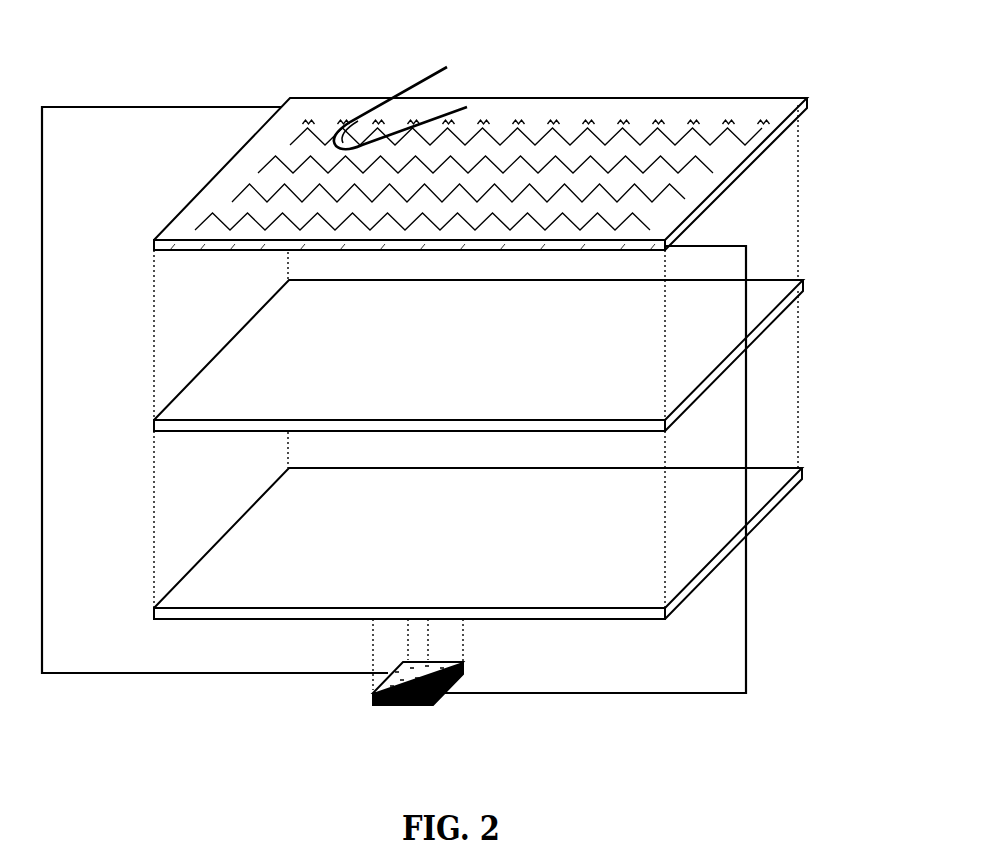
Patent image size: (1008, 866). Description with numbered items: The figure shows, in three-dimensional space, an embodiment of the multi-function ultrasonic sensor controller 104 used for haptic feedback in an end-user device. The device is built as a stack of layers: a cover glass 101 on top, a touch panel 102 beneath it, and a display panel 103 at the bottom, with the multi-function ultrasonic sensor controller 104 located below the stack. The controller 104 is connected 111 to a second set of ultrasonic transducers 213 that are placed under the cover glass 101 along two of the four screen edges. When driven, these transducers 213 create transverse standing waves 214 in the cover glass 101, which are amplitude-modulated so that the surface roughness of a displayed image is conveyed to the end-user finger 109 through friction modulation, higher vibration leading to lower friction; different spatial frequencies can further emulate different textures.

The cover glass 101 is at (114, 186).
The touch panel 102 is at (116, 367).
The display panel 103 is at (116, 557).
The multi-function ultrasonic sensor controller 104 is at (318, 664).
The end-user finger 109 is at (348, 54).
The connection 111 is at (88, 673).
The second set of ultrasonic transducers 213 is at (609, 117).
The transverse standing waves 214 is at (176, 167).